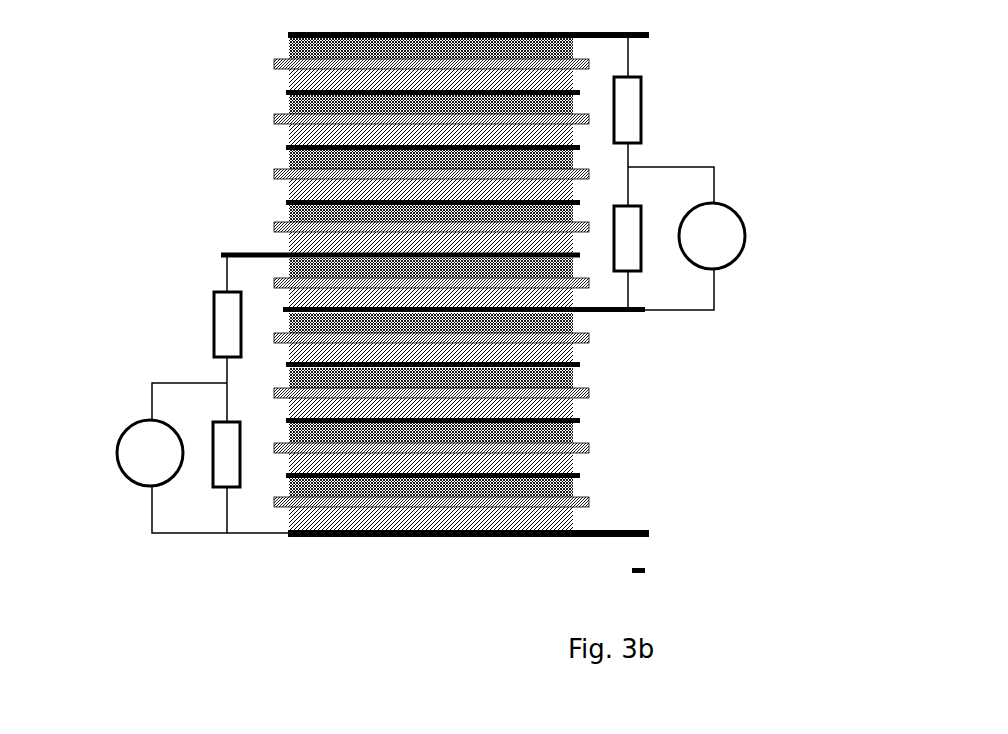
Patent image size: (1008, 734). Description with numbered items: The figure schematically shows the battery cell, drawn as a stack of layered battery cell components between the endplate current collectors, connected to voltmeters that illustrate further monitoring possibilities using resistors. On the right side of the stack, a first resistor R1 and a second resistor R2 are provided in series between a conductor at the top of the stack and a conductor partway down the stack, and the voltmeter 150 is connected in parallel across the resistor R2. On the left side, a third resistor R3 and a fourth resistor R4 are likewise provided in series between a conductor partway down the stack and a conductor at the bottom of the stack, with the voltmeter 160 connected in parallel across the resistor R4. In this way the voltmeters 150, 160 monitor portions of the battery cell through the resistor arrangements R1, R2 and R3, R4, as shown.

The voltmeter 150 is at (743, 240).
The voltmeter 160 is at (117, 444).
The resistor R1 is at (640, 110).
The resistor R2 is at (640, 238).
The resistor R3 is at (214, 324).
The resistor R4 is at (215, 454).